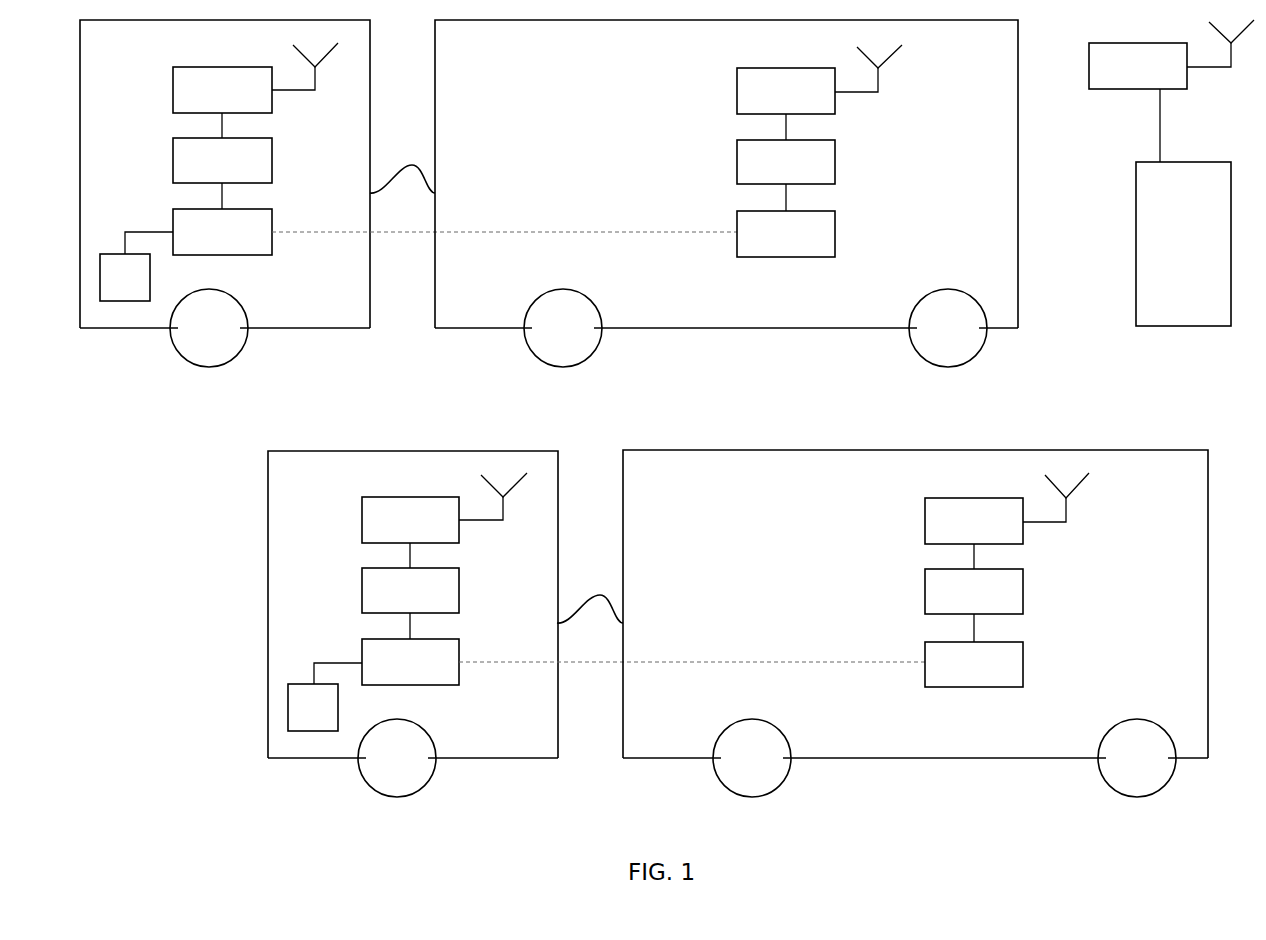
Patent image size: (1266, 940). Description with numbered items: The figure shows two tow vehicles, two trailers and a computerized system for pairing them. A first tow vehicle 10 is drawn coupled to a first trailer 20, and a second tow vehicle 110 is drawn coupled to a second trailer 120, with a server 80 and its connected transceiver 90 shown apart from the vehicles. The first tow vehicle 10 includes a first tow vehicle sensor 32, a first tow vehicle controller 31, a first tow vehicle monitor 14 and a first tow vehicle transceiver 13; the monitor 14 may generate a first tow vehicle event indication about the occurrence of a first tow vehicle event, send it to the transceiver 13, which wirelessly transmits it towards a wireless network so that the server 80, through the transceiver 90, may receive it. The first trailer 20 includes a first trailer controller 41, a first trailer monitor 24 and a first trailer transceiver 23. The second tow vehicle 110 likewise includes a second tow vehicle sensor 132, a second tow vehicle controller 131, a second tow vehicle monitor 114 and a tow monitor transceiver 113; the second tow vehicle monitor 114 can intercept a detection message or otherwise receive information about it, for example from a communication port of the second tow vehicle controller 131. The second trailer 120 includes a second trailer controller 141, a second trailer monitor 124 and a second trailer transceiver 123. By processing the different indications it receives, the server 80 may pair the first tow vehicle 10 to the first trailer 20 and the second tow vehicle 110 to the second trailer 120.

The first tow vehicle 10 is at (120, 41).
The first tow vehicle transceiver 13 is at (210, 100).
The first tow vehicle monitor 14 is at (210, 170).
The first tow vehicle controller 31 is at (210, 242).
The first tow vehicle sensor 32 is at (113, 288).
The first trailer 20 is at (502, 83).
The first trailer transceiver 23 is at (774, 101).
The first trailer monitor 24 is at (774, 171).
The first trailer controller 41 is at (774, 243).
The transceiver 90 is at (1126, 75).
The server 80 is at (1171, 253).
The second tow vehicle 110 is at (287, 483).
The tow monitor transceiver 113 is at (392, 530).
The second tow vehicle monitor 114 is at (392, 601).
The second tow vehicle controller 131 is at (392, 672).
The second tow vehicle sensor 132 is at (295, 718).
The second trailer 120 is at (671, 491).
The second trailer transceiver 123 is at (956, 531).
The second trailer monitor 124 is at (956, 602).
The second trailer controller 141 is at (956, 674).